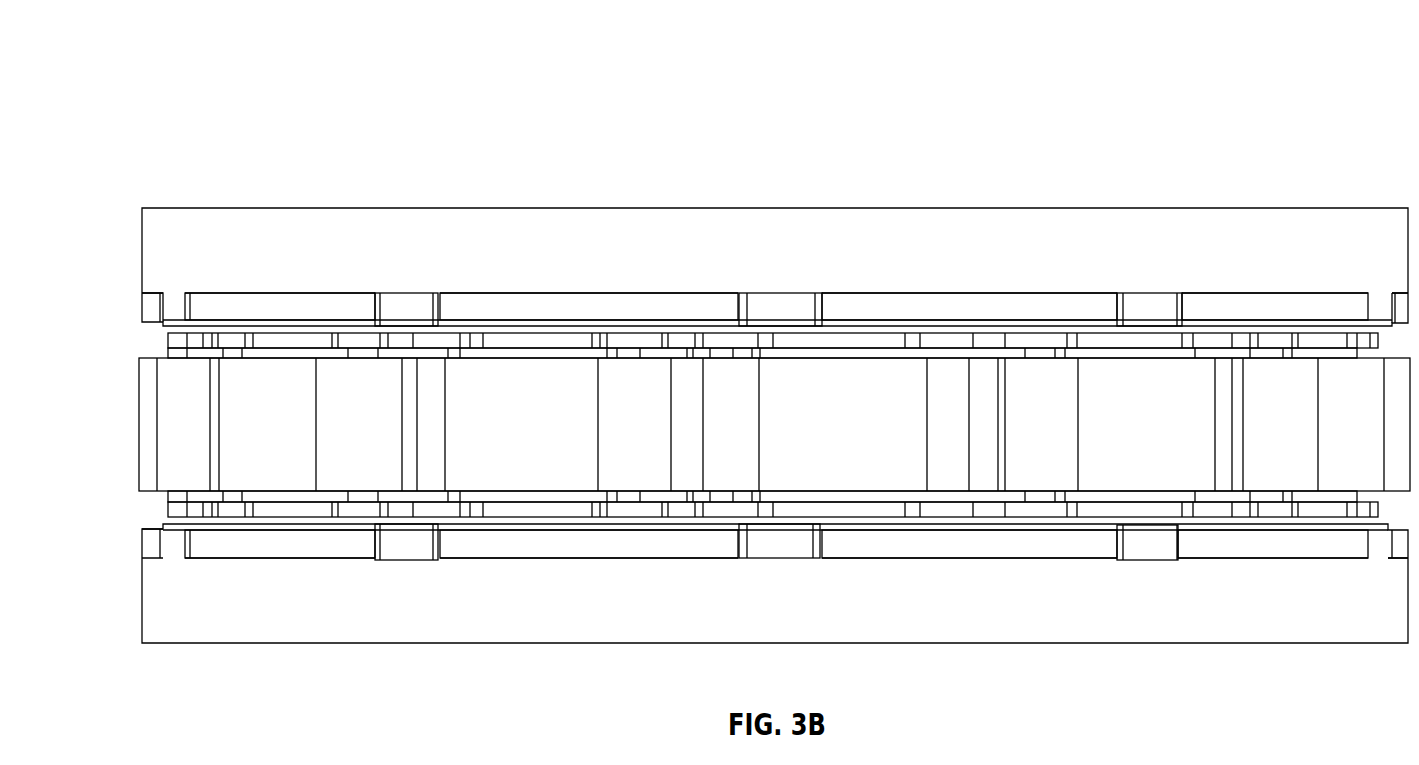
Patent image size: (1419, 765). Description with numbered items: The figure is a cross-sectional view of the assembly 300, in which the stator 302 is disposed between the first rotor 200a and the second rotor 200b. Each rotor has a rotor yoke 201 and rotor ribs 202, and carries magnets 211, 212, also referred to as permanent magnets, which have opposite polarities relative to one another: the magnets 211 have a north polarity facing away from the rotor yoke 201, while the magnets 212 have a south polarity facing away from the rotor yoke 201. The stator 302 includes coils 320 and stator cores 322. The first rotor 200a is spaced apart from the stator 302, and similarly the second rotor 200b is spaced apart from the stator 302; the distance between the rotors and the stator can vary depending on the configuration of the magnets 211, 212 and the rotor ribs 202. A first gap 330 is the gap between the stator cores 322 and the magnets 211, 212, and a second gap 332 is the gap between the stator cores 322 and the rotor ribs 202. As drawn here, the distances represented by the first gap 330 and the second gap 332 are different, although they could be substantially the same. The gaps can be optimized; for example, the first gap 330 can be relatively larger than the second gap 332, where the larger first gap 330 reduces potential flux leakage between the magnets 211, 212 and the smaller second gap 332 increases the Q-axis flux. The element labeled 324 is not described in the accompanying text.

The assembly 300 is at (137, 88).
The first rotor 200a is at (116, 268).
The second rotor 200b is at (116, 572).
The rotor yoke 201 is at (647, 257).
The rotor ribs 202 is at (408, 293).
The magnets 211 is at (215, 293).
The magnets 212 is at (140, 310).
The stator 302 is at (117, 426).
The coils 320 is at (332, 392).
The stator cores 322 is at (1016, 341).
The upper redistribution layer 324 is at (1168, 350).
The first gap 330 is at (622, 530).
The second gap 332 is at (770, 522).